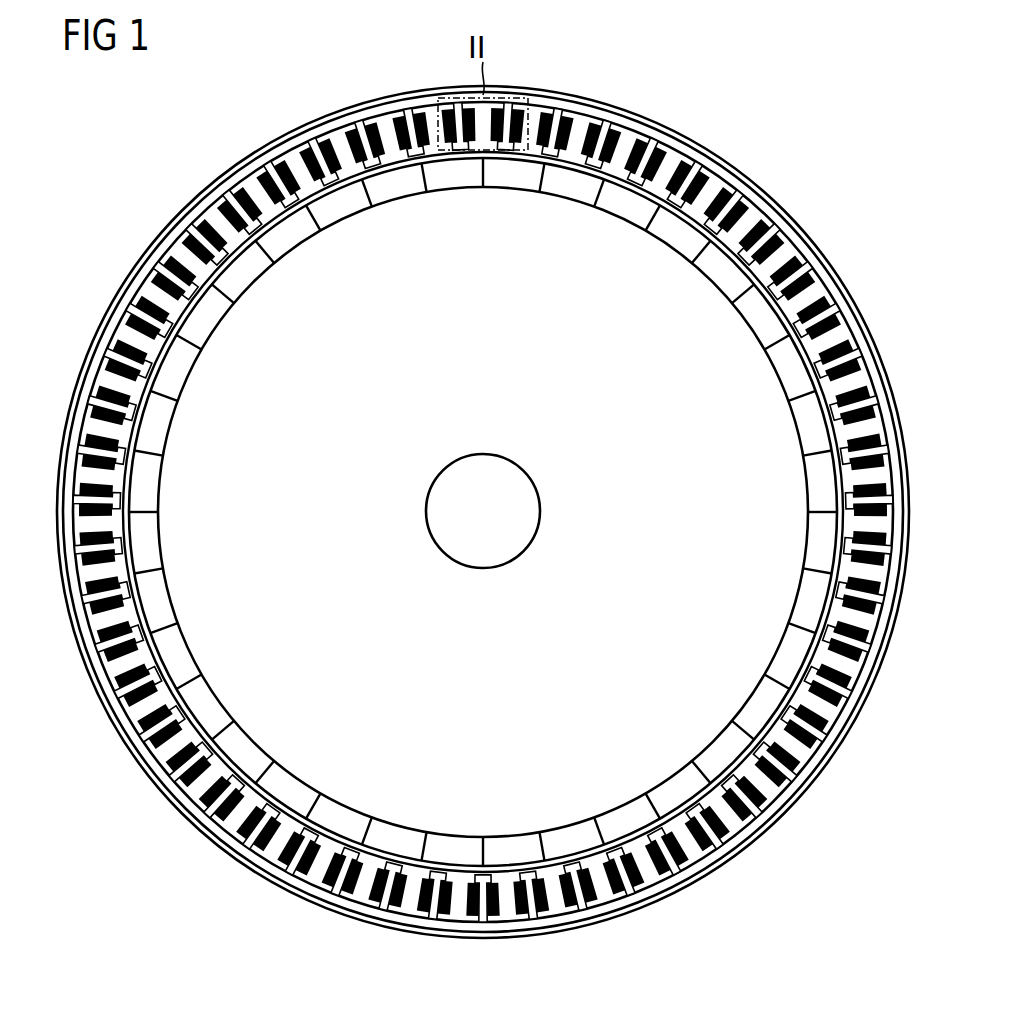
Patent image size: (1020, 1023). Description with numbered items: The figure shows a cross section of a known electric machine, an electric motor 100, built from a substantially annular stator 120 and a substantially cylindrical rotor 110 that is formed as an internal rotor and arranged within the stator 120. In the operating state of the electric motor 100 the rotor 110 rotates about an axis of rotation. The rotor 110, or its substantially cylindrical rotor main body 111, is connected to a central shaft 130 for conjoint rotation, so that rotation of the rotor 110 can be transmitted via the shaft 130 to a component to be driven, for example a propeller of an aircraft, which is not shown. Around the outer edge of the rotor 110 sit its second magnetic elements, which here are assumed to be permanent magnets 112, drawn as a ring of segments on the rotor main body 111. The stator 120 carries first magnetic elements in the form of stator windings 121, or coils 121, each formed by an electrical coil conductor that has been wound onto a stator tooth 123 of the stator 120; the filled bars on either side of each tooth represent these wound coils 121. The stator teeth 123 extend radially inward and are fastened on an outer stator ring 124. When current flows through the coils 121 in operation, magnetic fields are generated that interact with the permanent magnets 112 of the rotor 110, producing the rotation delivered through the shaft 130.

The electric motor 100 is at (806, 84).
The rotor 110 is at (727, 353).
The rotor main body 111 is at (683, 310).
The permanent magnets 112 is at (340, 203).
The stator 120 is at (737, 152).
The stator windings 121 is at (546, 100).
The stator tooth 123 is at (145, 290).
The stator ring 124 is at (373, 110).
The shaft 130 is at (426, 512).